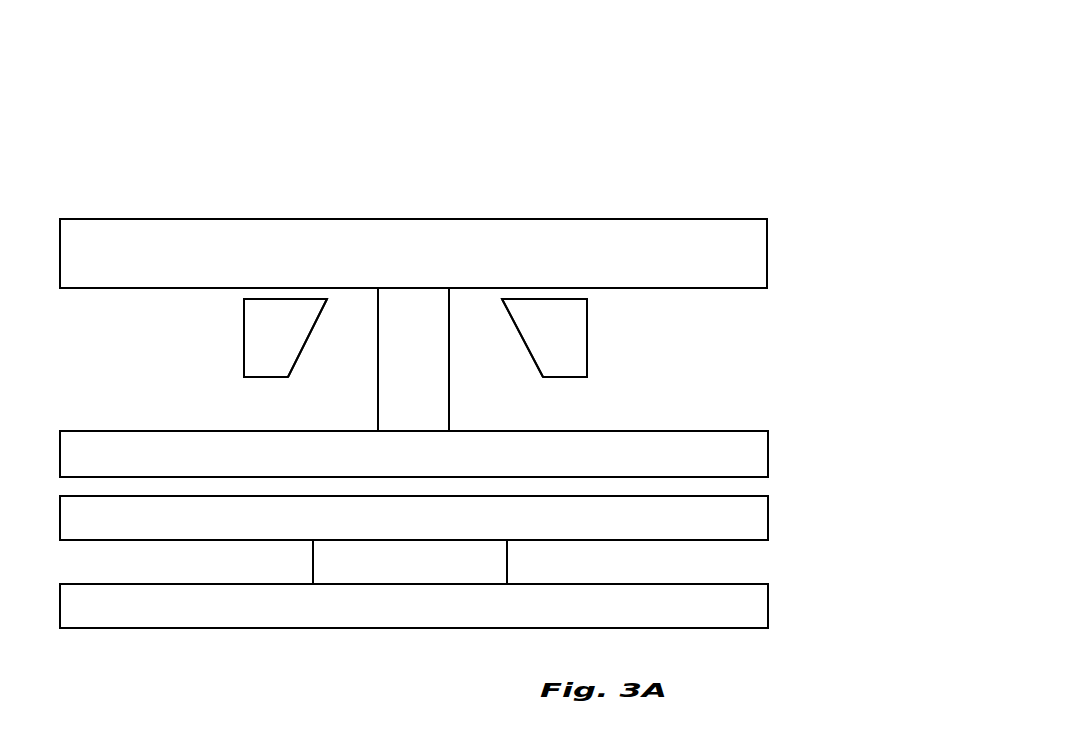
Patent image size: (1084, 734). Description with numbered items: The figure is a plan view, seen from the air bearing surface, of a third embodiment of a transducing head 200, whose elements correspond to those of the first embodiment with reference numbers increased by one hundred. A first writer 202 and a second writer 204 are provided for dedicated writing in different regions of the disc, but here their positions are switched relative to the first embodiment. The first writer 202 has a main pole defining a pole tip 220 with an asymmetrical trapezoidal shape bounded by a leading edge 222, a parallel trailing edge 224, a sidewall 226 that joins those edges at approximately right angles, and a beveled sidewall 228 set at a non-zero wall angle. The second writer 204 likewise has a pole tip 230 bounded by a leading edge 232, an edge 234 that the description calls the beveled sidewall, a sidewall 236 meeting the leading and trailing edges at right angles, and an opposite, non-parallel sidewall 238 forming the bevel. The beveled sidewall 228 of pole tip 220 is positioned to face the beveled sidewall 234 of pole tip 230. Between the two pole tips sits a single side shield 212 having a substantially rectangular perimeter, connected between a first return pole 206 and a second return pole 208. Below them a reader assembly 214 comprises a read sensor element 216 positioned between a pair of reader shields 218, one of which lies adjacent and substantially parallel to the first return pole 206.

The transducing head 200 is at (547, 105).
The first writer 202 is at (566, 280).
The second writer 204 is at (267, 275).
The first return pole 206 is at (708, 446).
The second return pole 208 is at (702, 232).
The single side shield 212 is at (412, 318).
The reader assembly 214 is at (397, 580).
The read sensor element 216 is at (405, 562).
The reader shields 218 is at (737, 534).
The pole tip 220 is at (544, 308).
The leading edge 222 is at (543, 378).
The trailing edge 224 is at (584, 297).
The sidewall 226 is at (587, 335).
The beveled sidewall 228 is at (528, 357).
The pole tip 230 is at (265, 318).
The leading edge 232 is at (269, 377).
The beveled sidewall 234 is at (243, 293).
The sidewall 236 is at (243, 332).
The sidewall 238 is at (307, 348).